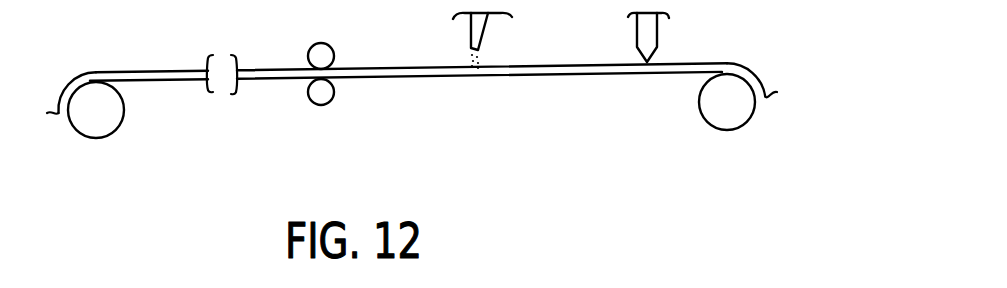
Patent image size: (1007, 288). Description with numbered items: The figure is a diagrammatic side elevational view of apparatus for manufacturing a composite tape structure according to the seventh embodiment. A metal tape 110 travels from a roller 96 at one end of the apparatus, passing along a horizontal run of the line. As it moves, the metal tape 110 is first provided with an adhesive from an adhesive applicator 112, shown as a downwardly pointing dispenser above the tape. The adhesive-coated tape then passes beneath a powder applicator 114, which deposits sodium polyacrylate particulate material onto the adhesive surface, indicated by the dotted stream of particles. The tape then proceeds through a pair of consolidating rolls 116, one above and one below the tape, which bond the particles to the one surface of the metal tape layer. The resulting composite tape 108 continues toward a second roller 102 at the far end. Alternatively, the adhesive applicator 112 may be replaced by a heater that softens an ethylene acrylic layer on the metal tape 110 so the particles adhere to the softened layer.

The roller 96 is at (723, 118).
The roller 102 is at (108, 118).
The tape 108 is at (155, 71).
The metal tape 110 is at (733, 63).
The adhesive applicator 112 is at (658, 38).
The powder applicator 114 is at (483, 30).
The consolidating rolls 116 is at (327, 54).